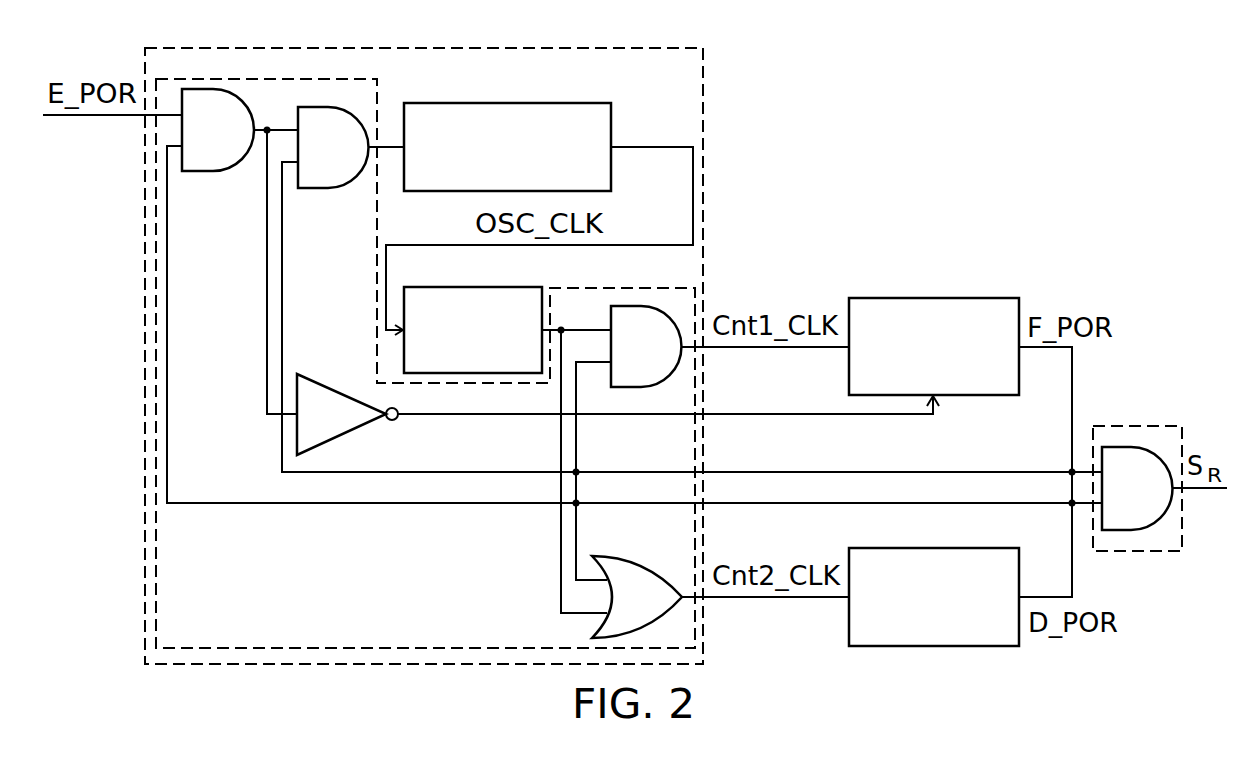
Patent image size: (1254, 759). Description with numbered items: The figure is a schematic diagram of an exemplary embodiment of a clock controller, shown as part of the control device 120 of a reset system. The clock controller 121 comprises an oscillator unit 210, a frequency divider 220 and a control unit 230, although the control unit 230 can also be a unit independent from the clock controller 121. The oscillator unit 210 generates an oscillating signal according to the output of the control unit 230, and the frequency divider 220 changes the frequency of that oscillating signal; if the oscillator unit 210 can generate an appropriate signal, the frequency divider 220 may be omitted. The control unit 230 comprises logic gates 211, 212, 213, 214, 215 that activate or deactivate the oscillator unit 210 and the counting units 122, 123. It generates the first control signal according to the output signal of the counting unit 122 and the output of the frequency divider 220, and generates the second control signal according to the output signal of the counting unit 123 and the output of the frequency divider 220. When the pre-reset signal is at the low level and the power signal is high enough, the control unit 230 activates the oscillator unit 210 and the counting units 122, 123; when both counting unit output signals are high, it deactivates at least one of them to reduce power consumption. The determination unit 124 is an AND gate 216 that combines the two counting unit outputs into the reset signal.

The control device 120 is at (979, 56).
The clock controller 121 is at (430, 44).
The counting unit 122 is at (850, 297).
The counting unit 123 is at (850, 547).
The determination unit 124 is at (1095, 425).
The oscillator unit 210 is at (405, 102).
The logic gate 211 is at (237, 146).
The logic gate 212 is at (350, 161).
The logic gate 213 is at (348, 425).
The logic gate 214 is at (663, 361).
The logic gate 215 is at (663, 611).
The AND gate 216 is at (1155, 503).
The frequency divider 220 is at (406, 285).
The control unit 230 is at (264, 78).